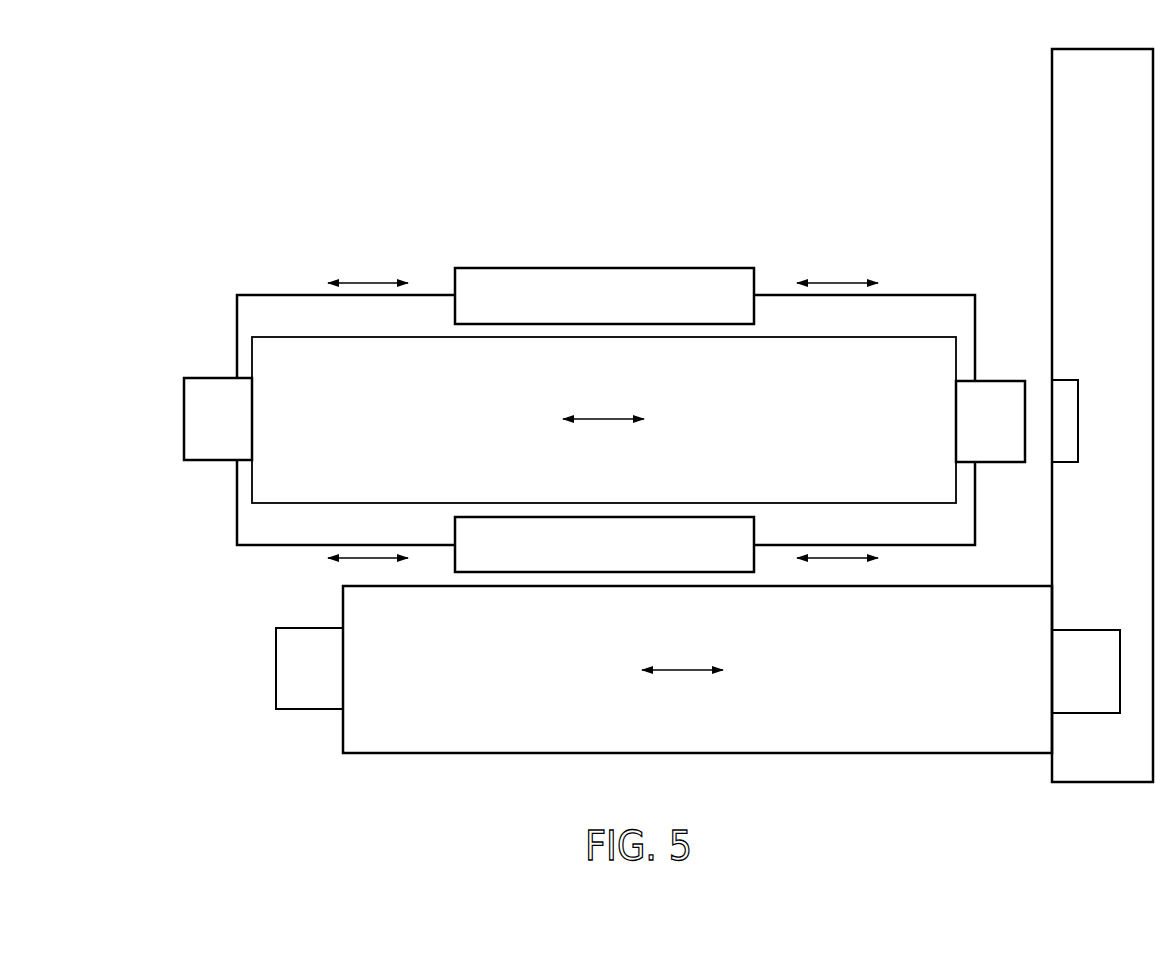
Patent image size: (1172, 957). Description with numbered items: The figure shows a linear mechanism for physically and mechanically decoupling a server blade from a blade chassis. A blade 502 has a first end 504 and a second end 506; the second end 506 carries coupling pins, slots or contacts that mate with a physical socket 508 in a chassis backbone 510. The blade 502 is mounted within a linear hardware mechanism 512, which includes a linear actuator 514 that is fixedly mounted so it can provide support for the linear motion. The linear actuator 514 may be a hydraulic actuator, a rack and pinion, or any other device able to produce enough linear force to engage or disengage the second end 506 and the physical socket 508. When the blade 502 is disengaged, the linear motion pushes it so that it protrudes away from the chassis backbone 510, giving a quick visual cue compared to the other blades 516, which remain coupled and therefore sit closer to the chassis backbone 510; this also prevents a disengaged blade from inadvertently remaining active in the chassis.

The blade 502 is at (380, 447).
The first end 504 is at (195, 365).
The second end 506 is at (997, 345).
The physical socket 508 is at (1078, 380).
The chassis backbone 510 is at (1038, 163).
The linear hardware mechanism 512 is at (411, 246).
The linear actuator 514 is at (577, 268).
The other blades 516 is at (472, 696).